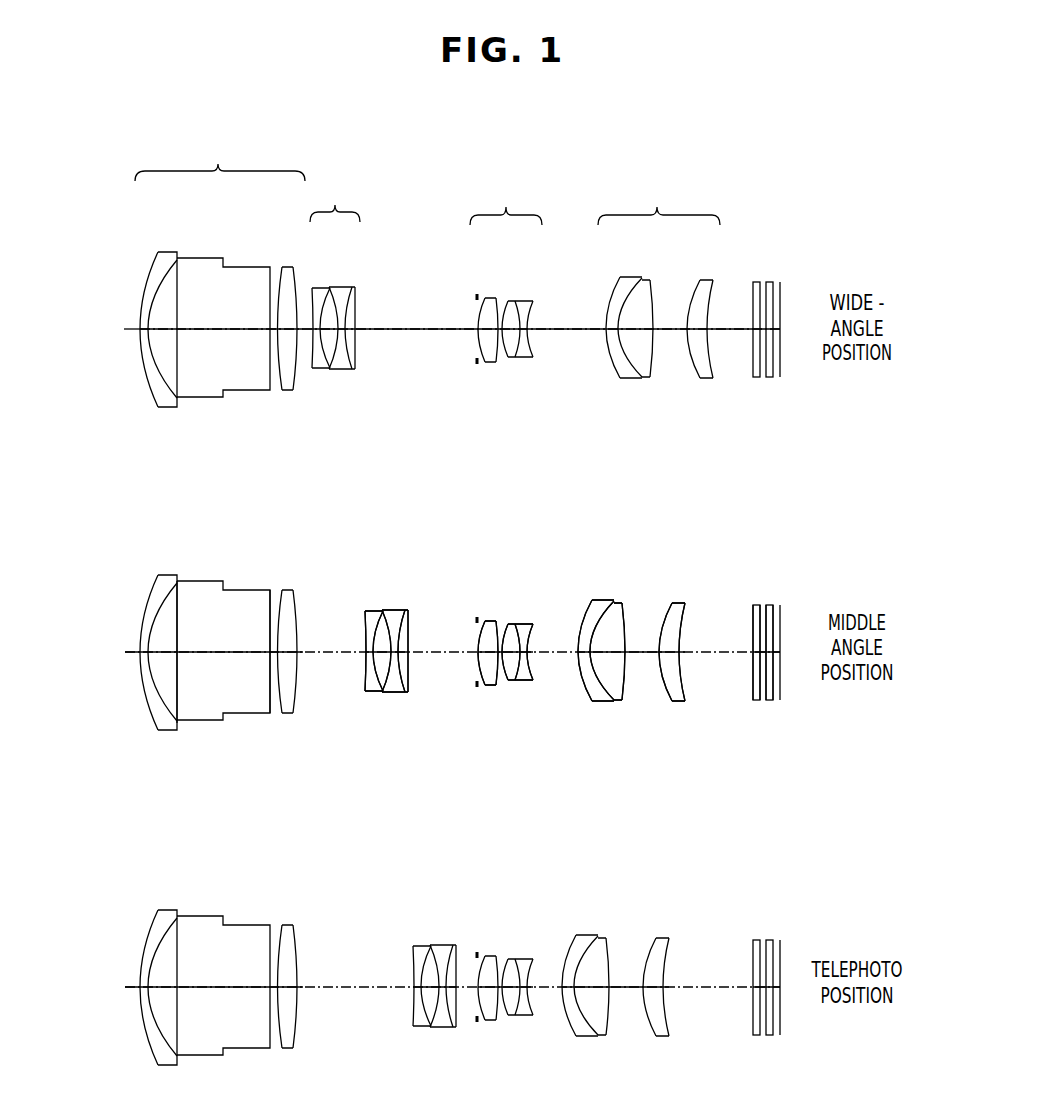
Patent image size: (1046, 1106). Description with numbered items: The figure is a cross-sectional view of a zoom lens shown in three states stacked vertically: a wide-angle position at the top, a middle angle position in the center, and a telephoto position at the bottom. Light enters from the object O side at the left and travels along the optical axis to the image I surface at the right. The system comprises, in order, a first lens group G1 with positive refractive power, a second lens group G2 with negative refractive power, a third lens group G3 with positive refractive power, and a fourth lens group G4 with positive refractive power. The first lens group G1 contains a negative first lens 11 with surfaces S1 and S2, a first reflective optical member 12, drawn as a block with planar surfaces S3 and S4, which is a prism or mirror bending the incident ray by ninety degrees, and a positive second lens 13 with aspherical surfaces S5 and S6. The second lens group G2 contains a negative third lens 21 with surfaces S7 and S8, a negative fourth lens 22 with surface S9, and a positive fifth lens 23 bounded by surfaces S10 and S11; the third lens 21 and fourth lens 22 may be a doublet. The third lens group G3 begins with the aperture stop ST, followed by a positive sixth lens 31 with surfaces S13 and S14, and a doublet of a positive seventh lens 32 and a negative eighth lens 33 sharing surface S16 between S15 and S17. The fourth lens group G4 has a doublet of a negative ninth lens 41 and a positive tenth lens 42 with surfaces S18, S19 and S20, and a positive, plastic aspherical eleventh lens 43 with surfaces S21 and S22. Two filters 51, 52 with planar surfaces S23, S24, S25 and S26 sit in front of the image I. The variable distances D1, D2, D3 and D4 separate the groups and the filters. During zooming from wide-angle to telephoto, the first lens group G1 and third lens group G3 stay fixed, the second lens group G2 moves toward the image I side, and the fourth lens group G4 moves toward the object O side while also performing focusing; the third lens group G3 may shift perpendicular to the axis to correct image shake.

The first lens 11 is at (157, 392).
The first reflective optical member 12 is at (202, 390).
The second lens 13 is at (283, 380).
The third lens 21 is at (319, 364).
The fourth lens 22 is at (340, 369).
The fifth lens 23 is at (357, 370).
The sixth lens 31 is at (490, 356).
The seventh lens 32 is at (508, 356).
The eighth lens 33 is at (527, 358).
The ninth lens 41 is at (630, 374).
The tenth lens 42 is at (645, 371).
The eleventh lens 43 is at (703, 373).
The filter 51 is at (755, 378).
The filter 52 is at (770, 378).
The first lens group G1 is at (207, 293).
The second lens group G2 is at (356, 307).
The third lens group G3 is at (517, 299).
The fourth lens group G4 is at (659, 305).
The variable distance D1 is at (307, 327).
The variable distance D2 is at (418, 327).
The variable distance D3 is at (567, 327).
The variable distance D4 is at (740, 327).
The object O is at (118, 329).
The image I is at (788, 329).
The aperture stop ST is at (476, 616).
The lens surface S1 is at (142, 683).
The lens surface S2 is at (165, 688).
The lens surface S3 is at (181, 707).
The lens surface S4 is at (268, 693).
The lens surface S5 is at (283, 702).
The lens surface S6 is at (298, 700).
The lens surface S7 is at (363, 683).
The lens surface S8 is at (373, 686).
The lens surface S9 is at (385, 688).
The lens surface S10 is at (402, 684).
The lens surface S11 is at (412, 674).
The lens surface S13 is at (483, 683).
The lens surface S14 is at (496, 679).
The lens surface S15 is at (510, 626).
The lens surface S16 is at (521, 626).
The lens surface S17 is at (532, 636).
The lens surface S18 is at (578, 670).
The lens surface S19 is at (594, 681).
The lens surface S20 is at (620, 694).
The lens surface S21 is at (658, 613).
The lens surface S22 is at (682, 620).
The filter surface S23 is at (752, 676).
The filter surface S24 is at (756, 691).
The filter surface S25 is at (768, 694).
The filter surface S26 is at (776, 682).